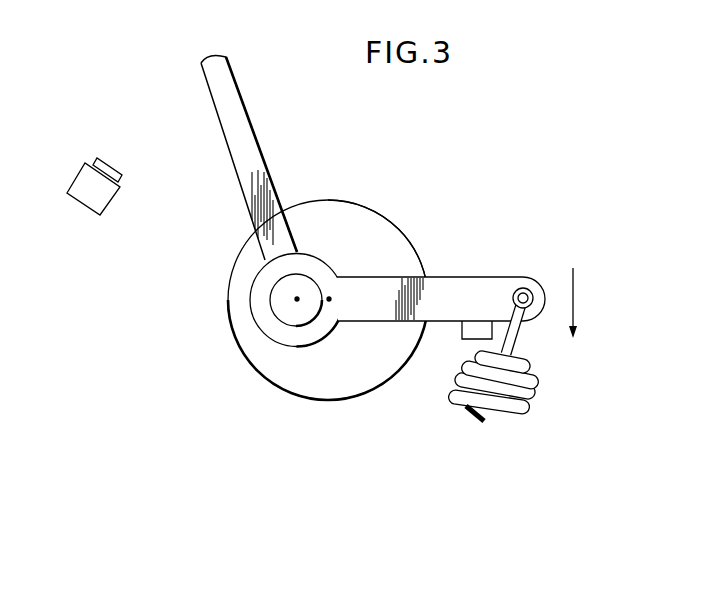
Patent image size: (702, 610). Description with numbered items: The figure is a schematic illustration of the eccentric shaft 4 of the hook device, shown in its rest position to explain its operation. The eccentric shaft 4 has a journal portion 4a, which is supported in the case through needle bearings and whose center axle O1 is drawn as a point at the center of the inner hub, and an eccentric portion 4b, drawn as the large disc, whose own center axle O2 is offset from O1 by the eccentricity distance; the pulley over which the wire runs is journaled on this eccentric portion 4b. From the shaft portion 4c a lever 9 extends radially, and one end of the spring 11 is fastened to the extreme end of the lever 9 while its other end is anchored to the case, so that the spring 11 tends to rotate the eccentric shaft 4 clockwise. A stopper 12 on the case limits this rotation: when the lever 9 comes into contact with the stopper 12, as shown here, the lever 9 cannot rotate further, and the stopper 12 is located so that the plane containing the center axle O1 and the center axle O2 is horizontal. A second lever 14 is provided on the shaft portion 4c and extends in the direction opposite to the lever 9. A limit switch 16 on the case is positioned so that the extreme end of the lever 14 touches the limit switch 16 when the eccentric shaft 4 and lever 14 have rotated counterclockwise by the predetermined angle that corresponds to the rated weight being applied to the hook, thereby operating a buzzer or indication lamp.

The eccentric shaft 4 is at (338, 188).
The journal portion 4a is at (255, 328).
The eccentric portion 4b is at (408, 237).
The shaft portion 4c is at (270, 299).
The lever 9 is at (472, 277).
The spring 11 is at (532, 398).
The stopper 12 is at (462, 338).
The lever 14 is at (236, 127).
The limit switch 16 is at (88, 204).
The center axle of the journal portion O1 is at (296, 301).
The center axle of the eccentric portion O2 is at (328, 301).